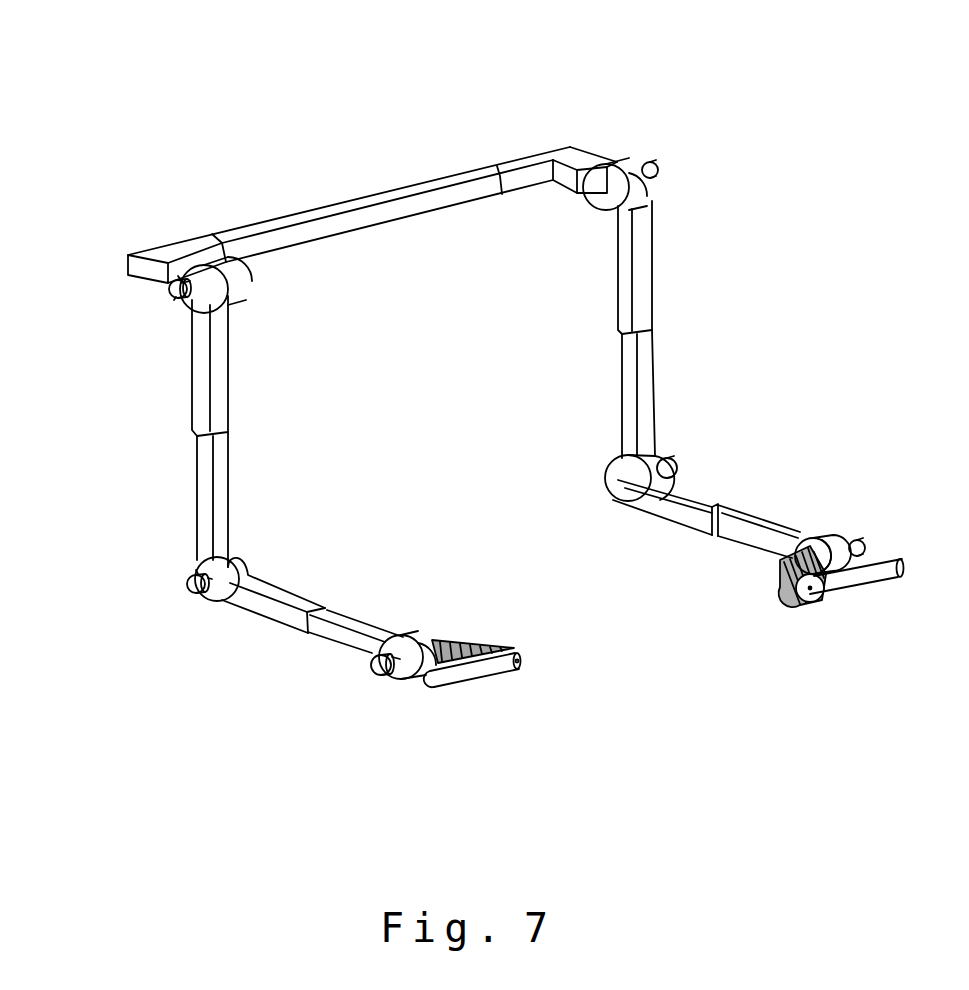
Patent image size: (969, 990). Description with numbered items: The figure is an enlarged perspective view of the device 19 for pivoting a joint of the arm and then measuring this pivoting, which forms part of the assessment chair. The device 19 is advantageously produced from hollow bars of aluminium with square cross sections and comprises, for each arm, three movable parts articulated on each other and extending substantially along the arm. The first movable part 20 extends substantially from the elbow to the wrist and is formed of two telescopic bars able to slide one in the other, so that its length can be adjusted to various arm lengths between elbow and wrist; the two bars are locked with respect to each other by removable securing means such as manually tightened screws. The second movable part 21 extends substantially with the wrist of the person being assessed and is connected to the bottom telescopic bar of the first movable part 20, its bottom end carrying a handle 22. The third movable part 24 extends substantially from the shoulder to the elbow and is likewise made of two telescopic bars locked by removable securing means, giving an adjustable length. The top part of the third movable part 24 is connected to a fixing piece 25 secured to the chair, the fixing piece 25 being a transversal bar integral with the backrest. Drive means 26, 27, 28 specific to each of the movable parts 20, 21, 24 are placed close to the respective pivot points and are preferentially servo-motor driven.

The device 19 is at (311, 158).
The first movable part 20 is at (276, 610).
The second movable part 21 is at (488, 644).
The handle 22 is at (470, 676).
The third movable part 24 is at (191, 414).
The fixing piece 25 is at (373, 217).
The drive means 26 is at (170, 298).
The drive means 27 is at (200, 587).
The drive means 28 is at (376, 666).